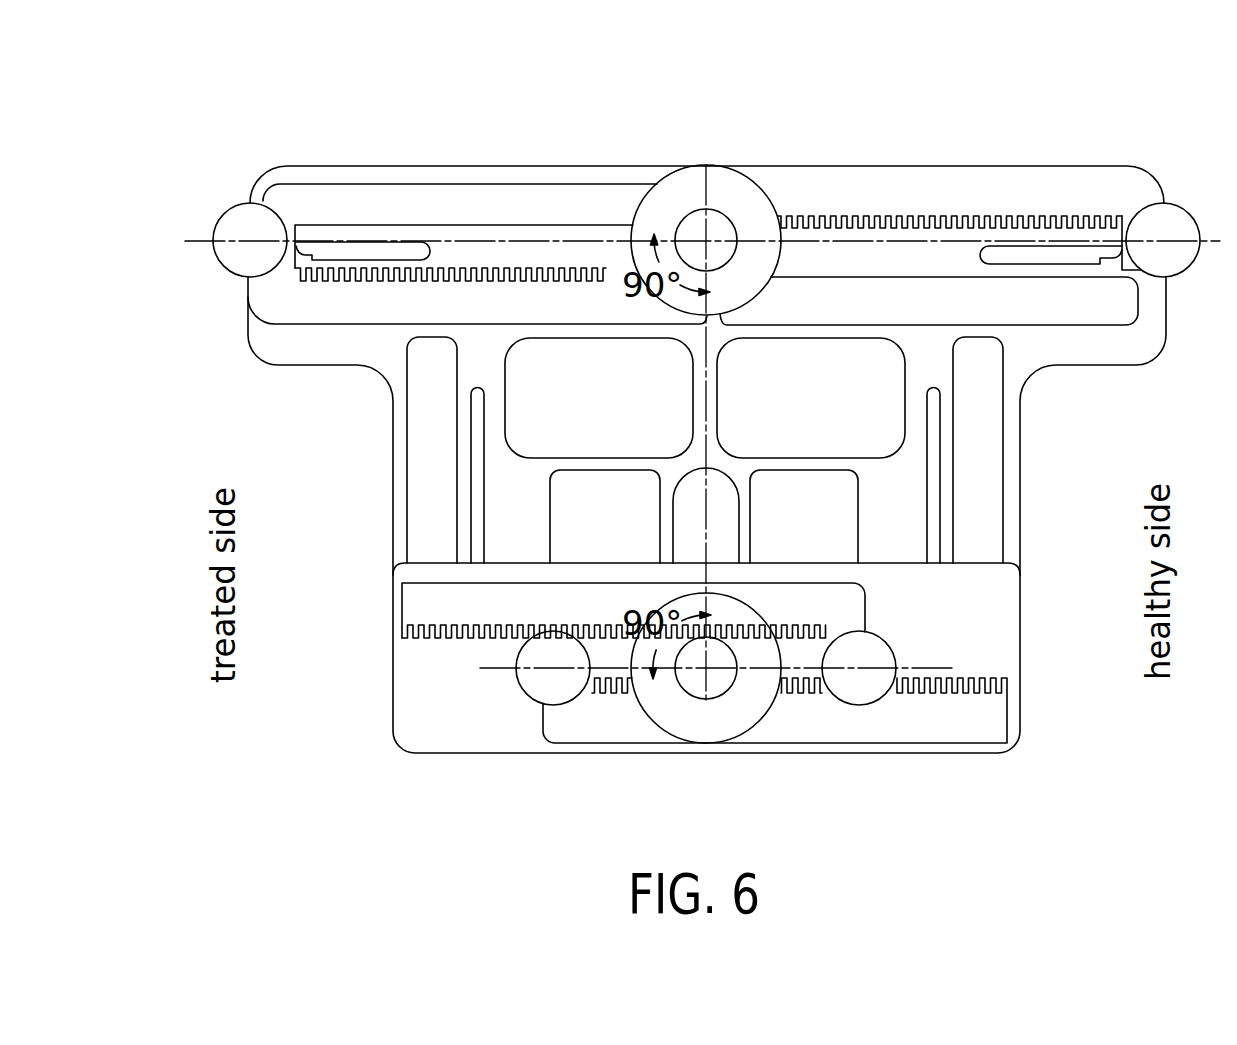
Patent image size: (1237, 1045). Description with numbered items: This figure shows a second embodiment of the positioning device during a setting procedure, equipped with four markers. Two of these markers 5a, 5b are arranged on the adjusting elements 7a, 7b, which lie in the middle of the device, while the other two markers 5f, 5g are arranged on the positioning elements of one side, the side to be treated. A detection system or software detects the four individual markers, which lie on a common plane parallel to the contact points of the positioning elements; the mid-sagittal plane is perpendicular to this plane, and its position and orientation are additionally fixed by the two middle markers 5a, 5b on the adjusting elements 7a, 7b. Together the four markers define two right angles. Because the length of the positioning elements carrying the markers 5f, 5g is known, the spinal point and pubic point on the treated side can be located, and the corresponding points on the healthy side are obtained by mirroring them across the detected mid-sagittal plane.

The marker 5a is at (717, 225).
The adjusting element 7a is at (847, 220).
The marker 5g is at (238, 258).
The marker 5f is at (540, 685).
The marker 5b is at (713, 682).
The adjusting element 7b is at (805, 693).